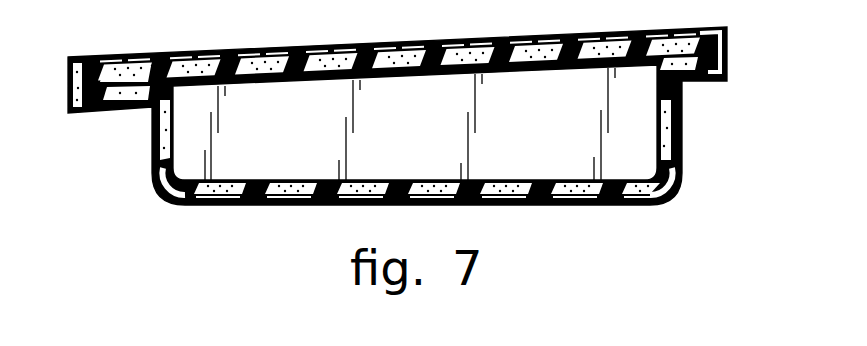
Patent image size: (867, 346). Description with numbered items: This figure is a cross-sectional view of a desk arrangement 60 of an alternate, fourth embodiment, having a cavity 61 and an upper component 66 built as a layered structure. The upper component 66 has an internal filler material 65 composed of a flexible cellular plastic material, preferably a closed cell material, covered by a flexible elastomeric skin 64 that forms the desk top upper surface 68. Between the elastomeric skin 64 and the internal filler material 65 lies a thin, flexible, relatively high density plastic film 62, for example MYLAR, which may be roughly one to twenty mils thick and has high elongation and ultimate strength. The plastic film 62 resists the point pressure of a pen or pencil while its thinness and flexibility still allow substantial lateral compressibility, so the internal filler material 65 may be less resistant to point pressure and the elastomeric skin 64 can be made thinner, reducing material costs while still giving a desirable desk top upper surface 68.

The desk arrangement 60 is at (78, 56).
The cavity 61 is at (638, 143).
The plastic film 62 is at (503, 45).
The elastomeric skin 64 is at (373, 44).
The internal filler material 65 is at (727, 33).
The upper component 66 is at (262, 50).
The desk top upper surface 68 is at (162, 54).